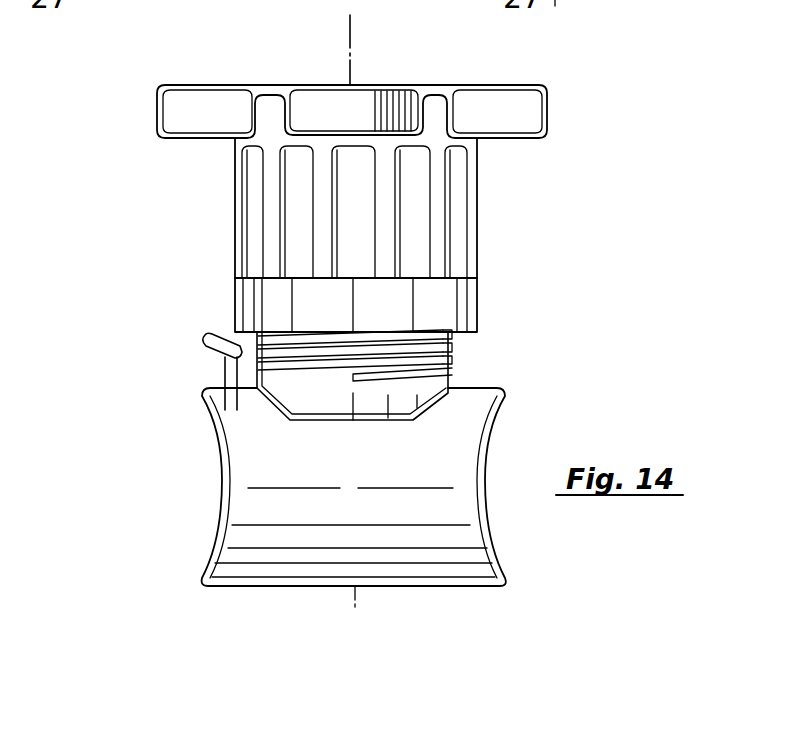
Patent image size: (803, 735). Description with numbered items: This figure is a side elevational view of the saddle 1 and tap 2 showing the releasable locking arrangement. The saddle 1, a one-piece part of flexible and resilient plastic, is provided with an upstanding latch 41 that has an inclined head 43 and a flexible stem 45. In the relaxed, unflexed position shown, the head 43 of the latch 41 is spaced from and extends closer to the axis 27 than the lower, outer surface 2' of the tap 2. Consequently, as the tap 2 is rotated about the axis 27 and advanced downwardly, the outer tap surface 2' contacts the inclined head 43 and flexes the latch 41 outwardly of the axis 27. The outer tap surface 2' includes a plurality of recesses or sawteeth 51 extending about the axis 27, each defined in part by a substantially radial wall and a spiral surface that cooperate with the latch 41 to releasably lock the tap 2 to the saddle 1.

The saddle 1 is at (433, 460).
The tap 2 is at (301, 252).
The lower outer surface of the tap 2' is at (305, 288).
The axis 27 is at (349, 38).
The latch 41 is at (206, 370).
The head 43 is at (210, 335).
The flexible stem 45 is at (212, 378).
The recesses or sawteeth 51 is at (378, 306).